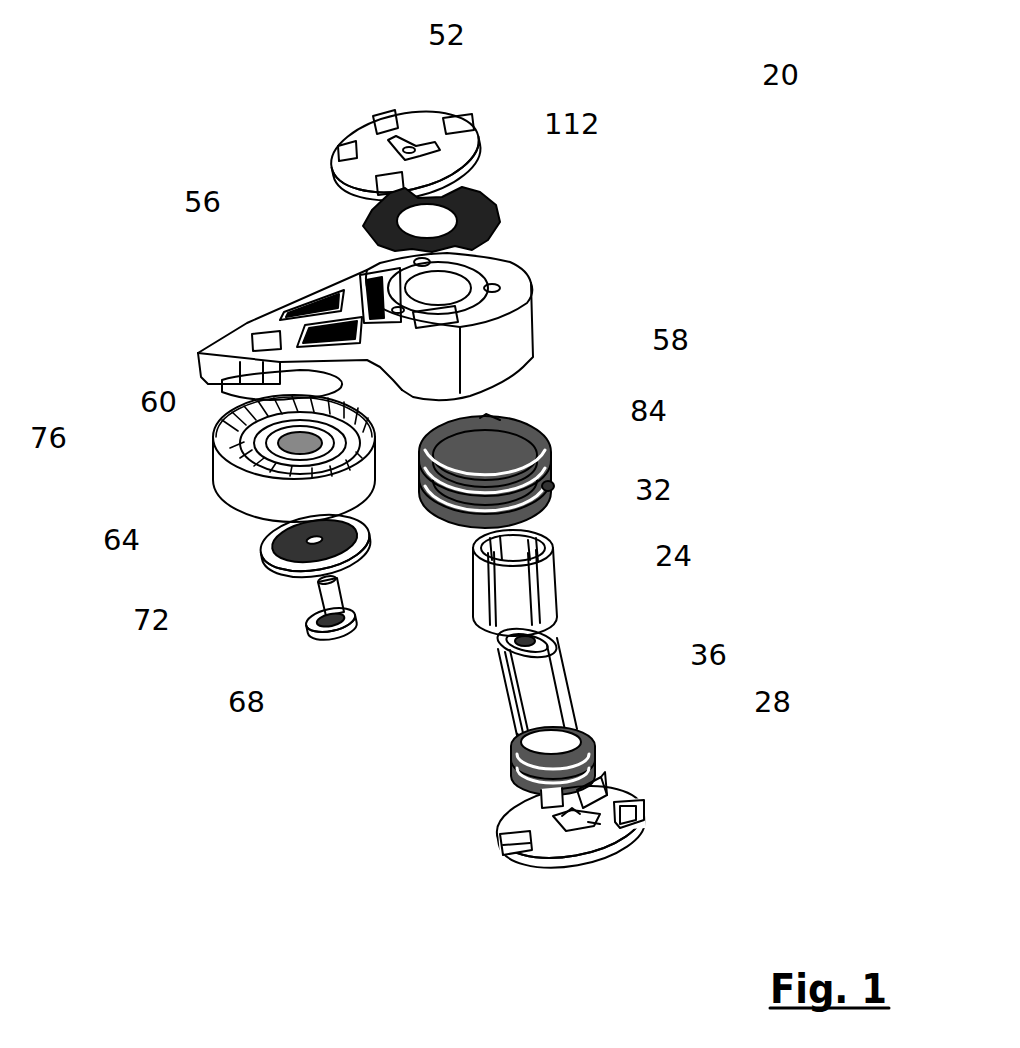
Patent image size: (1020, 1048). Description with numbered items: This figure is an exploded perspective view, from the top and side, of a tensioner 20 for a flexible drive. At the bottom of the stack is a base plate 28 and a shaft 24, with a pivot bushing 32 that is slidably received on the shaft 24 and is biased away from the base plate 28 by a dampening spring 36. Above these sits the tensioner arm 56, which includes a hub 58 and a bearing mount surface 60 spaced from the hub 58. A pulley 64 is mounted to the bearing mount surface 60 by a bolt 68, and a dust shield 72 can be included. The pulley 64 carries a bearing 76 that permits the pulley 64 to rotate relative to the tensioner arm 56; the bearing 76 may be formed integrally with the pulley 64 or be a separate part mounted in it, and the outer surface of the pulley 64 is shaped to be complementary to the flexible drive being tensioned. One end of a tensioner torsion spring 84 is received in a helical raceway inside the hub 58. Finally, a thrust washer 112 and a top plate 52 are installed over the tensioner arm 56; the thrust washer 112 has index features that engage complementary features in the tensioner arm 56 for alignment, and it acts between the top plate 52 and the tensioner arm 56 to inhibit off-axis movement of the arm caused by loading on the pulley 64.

The tensioner 20 is at (750, 75).
The shaft 24 is at (575, 636).
The base plate 28 is at (625, 793).
The pivot bushing 32 is at (560, 540).
The dampening spring 36 is at (597, 736).
The top plate 52 is at (414, 109).
The tensioner arm 56 is at (290, 292).
The hub 58 is at (520, 343).
The bearing mount surface 60 is at (250, 396).
The pulley 64 is at (230, 495).
The bolt 68 is at (320, 636).
The dust shield 72 is at (275, 568).
The bearing 76 is at (216, 446).
The tensioner torsion spring 84 is at (560, 452).
The thrust washer 112 is at (498, 210).